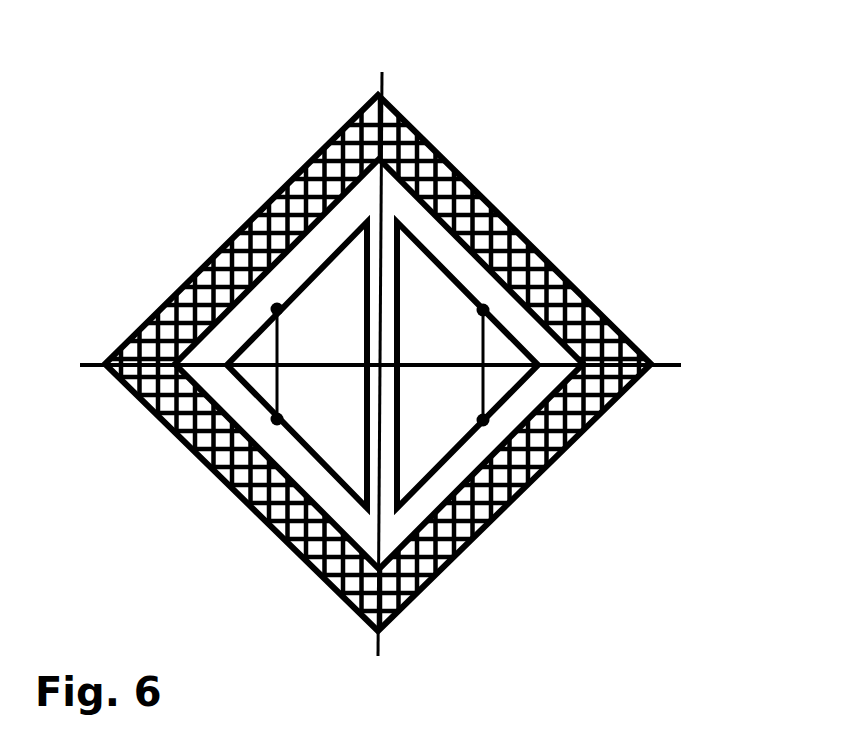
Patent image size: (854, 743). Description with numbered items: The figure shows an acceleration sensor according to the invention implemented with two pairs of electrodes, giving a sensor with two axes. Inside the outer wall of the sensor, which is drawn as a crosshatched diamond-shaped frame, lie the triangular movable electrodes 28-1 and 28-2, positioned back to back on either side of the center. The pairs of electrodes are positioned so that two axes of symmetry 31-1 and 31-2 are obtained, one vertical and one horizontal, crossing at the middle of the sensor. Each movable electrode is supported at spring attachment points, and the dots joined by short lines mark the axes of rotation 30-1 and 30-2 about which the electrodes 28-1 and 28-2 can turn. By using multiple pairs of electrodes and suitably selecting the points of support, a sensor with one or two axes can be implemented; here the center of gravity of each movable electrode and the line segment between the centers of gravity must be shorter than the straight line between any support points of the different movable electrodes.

The axis of symmetry 31-1 is at (380, 89).
The axis of symmetry 31-2 is at (677, 363).
The triangular movable electrode 28-1 is at (464, 290).
The triangular movable electrode 28-2 is at (313, 448).
The axis of rotation 30-1 is at (483, 310).
The axis of rotation 30-2 is at (272, 386).